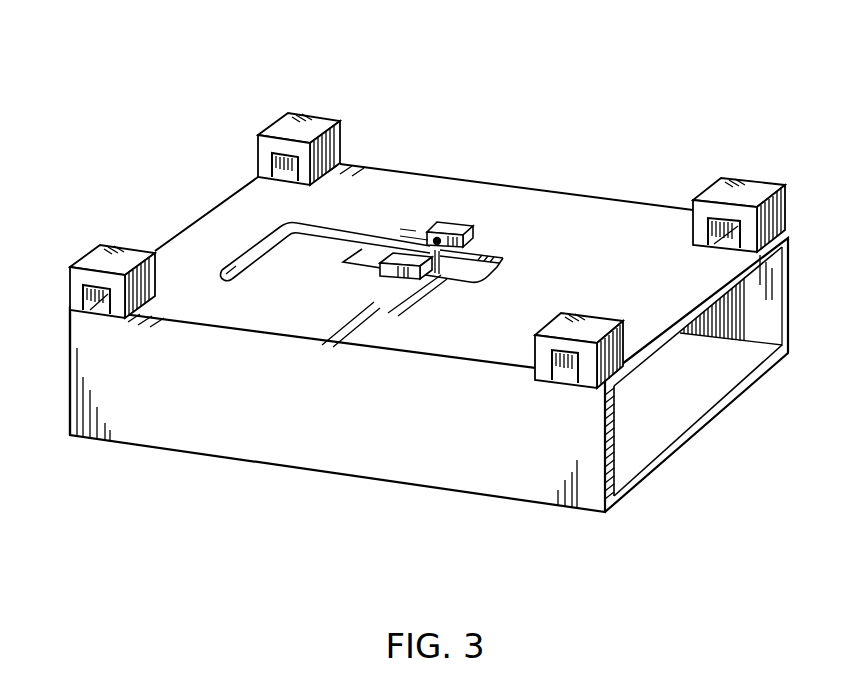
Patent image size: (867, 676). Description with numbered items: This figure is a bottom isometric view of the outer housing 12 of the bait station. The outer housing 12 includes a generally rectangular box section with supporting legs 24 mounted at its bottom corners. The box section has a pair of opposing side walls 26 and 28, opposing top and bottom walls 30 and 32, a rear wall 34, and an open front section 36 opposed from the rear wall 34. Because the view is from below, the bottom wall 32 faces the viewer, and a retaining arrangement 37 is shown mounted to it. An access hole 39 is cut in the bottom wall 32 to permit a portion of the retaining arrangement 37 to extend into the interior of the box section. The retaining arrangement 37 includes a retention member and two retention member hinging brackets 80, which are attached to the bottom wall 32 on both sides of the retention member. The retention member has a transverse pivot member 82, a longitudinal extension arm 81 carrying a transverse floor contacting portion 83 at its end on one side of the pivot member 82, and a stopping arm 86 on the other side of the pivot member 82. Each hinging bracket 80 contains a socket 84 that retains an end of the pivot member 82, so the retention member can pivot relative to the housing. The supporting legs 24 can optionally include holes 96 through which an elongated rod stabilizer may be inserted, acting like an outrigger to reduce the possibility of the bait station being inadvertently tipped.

The outer housing 12 is at (683, 106).
The supporting legs 24 is at (314, 124).
The side wall 26 is at (411, 459).
The side wall 28 is at (782, 343).
The top wall 30 is at (673, 397).
The bottom wall 32 is at (582, 249).
The rear wall 34 is at (70, 362).
The open front section 36 is at (652, 430).
The retaining arrangement 37 is at (408, 212).
The access hole 39 is at (490, 270).
The retention member hinging brackets 80 is at (470, 223).
The longitudinal extension arm 81 is at (308, 230).
The pivot member 82 is at (427, 240).
The floor contacting portion 83 is at (254, 262).
The socket 84 is at (440, 238).
The stopping arm 86 is at (452, 280).
The holes 96 is at (260, 162).